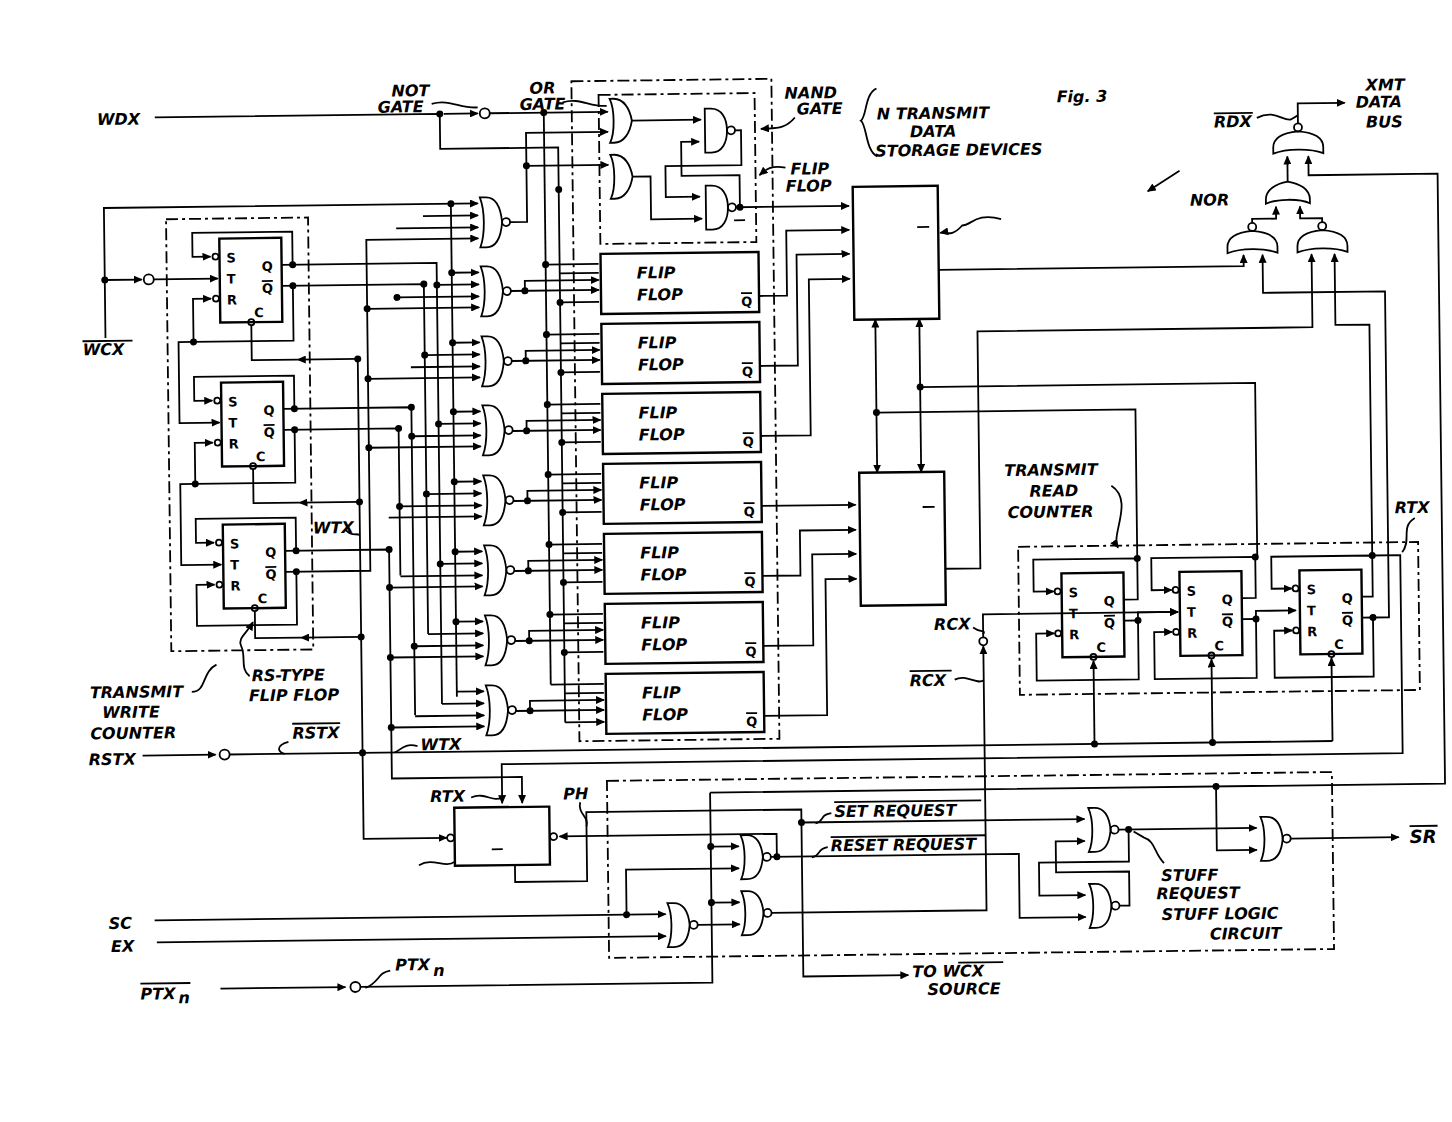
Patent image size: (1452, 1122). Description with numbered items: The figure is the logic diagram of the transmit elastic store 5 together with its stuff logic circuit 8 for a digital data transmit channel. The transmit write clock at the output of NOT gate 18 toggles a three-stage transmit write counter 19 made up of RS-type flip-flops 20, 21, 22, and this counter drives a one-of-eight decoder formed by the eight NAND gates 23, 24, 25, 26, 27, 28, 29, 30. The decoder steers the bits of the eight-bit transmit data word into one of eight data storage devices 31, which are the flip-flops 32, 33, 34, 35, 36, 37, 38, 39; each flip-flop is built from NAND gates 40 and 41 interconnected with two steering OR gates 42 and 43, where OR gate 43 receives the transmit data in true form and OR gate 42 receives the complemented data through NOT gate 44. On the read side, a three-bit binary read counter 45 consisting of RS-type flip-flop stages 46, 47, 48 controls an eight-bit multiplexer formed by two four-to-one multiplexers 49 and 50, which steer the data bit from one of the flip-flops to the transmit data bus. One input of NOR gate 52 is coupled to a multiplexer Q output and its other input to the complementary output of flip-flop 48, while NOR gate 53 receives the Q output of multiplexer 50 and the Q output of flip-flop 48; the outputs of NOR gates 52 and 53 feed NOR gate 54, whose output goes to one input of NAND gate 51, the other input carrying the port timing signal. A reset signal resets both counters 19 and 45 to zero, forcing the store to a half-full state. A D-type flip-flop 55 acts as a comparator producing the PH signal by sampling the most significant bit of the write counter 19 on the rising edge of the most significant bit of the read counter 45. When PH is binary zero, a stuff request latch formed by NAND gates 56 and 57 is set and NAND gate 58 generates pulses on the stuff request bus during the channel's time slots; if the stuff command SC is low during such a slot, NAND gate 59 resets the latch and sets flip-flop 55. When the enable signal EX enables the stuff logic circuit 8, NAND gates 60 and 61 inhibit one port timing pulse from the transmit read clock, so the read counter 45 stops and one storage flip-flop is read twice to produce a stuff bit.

The transmit elastic store 5 is at (1171, 176).
The stuff logic circuit 8 is at (1335, 927).
The NOT gate 18 is at (147, 266).
The transmit write counter 19 is at (170, 603).
The RS-type flip-flop 20 is at (287, 273).
The RS-type flip-flop 21 is at (290, 436).
The RS-type flip-flop 22 is at (290, 590).
The NAND gate 23 is at (544, 190).
The NAND gate 24 is at (539, 281).
The NAND gate 25 is at (540, 351).
The NAND gate 26 is at (541, 420).
The NAND gate 27 is at (542, 490).
The NAND gate 28 is at (543, 560).
The NAND gate 29 is at (544, 630).
The NAND gate 30 is at (545, 701).
The data storage devices 31 is at (777, 461).
The flip-flop 32 is at (724, 168).
The flip-flop 33 is at (762, 305).
The flip-flop 34 is at (762, 375).
The flip-flop 35 is at (762, 410).
The flip-flop 36 is at (762, 484).
The flip-flop 37 is at (762, 595).
The flip-flop 38 is at (762, 665).
The flip-flop 39 is at (762, 696).
The NAND gate 40 is at (708, 124).
The NAND gate 41 is at (708, 202).
The steering OR gate 42 is at (656, 119).
The steering OR gate 43 is at (656, 183).
The NOT gate 44 is at (490, 116).
The read counter 45 is at (1312, 550).
The RS-type flip-flop stage 46 is at (1066, 657).
The RS-type flip-flop stage 47 is at (1184, 658).
The RS-type flip-flop stage 48 is at (1304, 659).
The 4-to-1 multiplexer 49 is at (942, 252).
The 4-to-1 multiplexer 50 is at (906, 607).
The NAND gate 51 is at (1325, 150).
The NOR gate 52 is at (1240, 241).
The NOR gate 53 is at (1342, 241).
The NOR gate 54 is at (1282, 194).
The D-type flip-flop 55 is at (486, 865).
The NAND gate 56 is at (1098, 818).
The NAND gate 57 is at (1098, 915).
The NAND gate 58 is at (1268, 824).
The NAND gate 59 is at (762, 865).
The NAND gate 60 is at (684, 900).
The NAND gate 61 is at (762, 921).